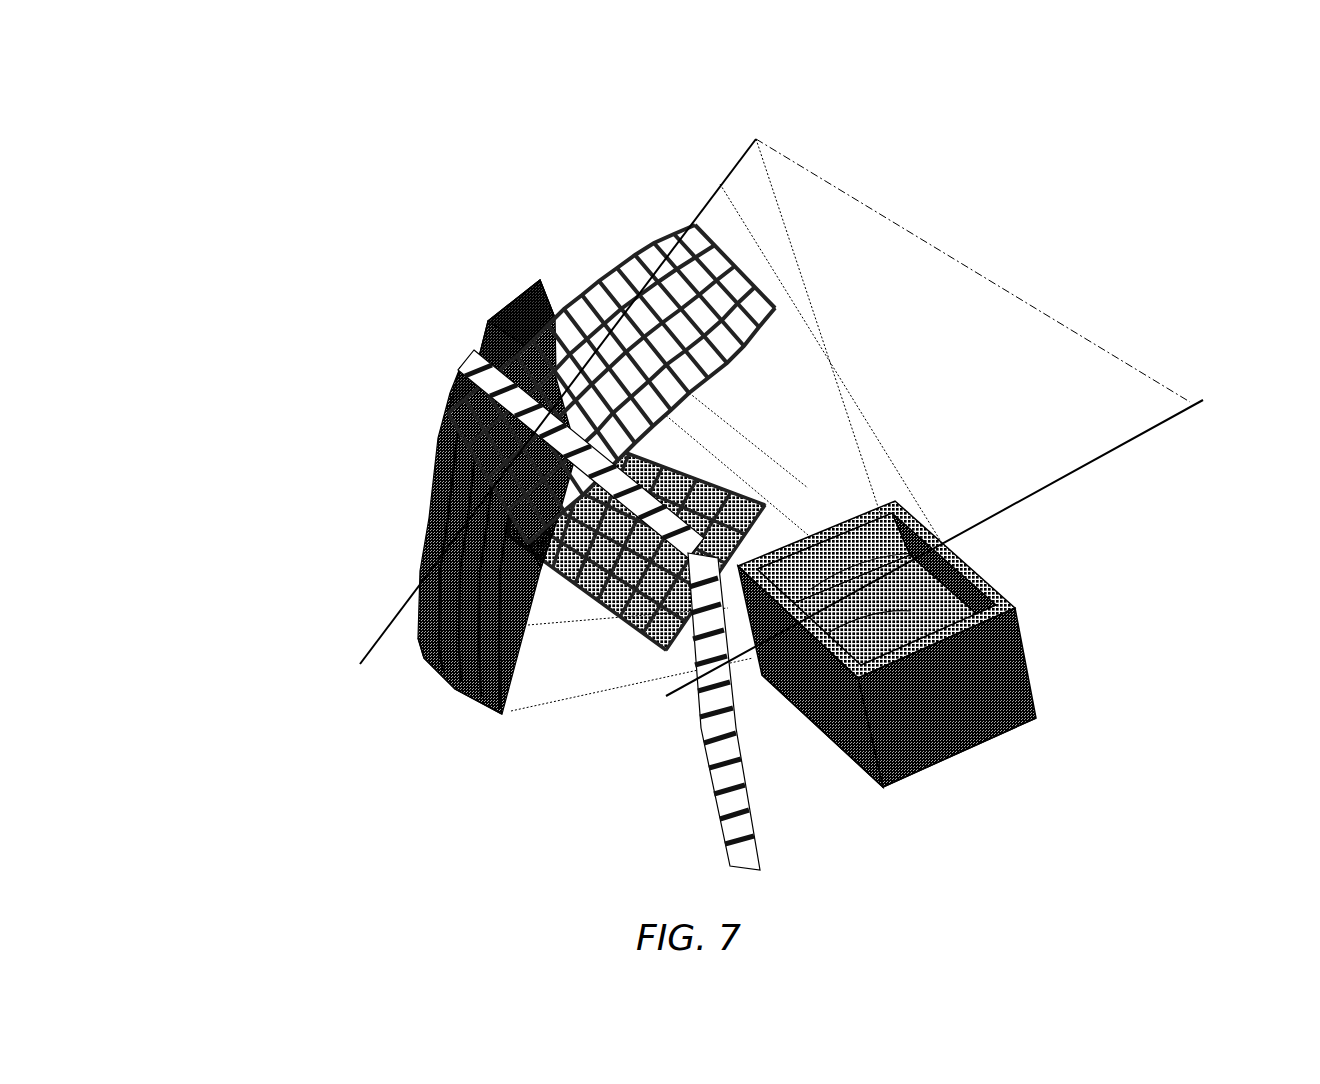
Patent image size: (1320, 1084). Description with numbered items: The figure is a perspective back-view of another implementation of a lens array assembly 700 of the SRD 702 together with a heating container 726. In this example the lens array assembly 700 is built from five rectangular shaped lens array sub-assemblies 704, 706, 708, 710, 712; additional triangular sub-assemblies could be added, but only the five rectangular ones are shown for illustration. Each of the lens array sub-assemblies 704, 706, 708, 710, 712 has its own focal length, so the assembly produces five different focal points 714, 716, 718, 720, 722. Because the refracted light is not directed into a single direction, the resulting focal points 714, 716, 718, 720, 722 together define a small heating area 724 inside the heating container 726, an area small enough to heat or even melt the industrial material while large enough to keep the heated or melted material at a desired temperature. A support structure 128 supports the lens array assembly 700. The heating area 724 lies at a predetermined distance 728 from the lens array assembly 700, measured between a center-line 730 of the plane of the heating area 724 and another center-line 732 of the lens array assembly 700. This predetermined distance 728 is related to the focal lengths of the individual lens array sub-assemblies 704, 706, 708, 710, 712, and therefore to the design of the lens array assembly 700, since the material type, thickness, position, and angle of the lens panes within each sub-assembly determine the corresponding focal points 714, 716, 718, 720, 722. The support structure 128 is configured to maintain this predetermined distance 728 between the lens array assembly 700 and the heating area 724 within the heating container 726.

The lens array assembly 700 is at (295, 373).
The SRD 702 is at (1128, 168).
The lens array sub-assembly 704 is at (498, 328).
The lens array sub-assembly 706 is at (580, 283).
The lens array sub-assembly 708 is at (608, 612).
The lens array sub-assembly 710 is at (412, 590).
The lens array sub-assembly 712 is at (437, 457).
The focal point 714 is at (814, 722).
The focal point 716 is at (851, 765).
The focal point 718 is at (935, 530).
The focal point 720 is at (834, 522).
The focal point 722 is at (976, 573).
The heating area 724 is at (1009, 592).
The heating container 726 is at (1030, 685).
The predetermined distance 728 is at (1100, 349).
The center-line 730 is at (1143, 423).
The center-line 732 is at (738, 136).
The support structure 128 is at (830, 838).